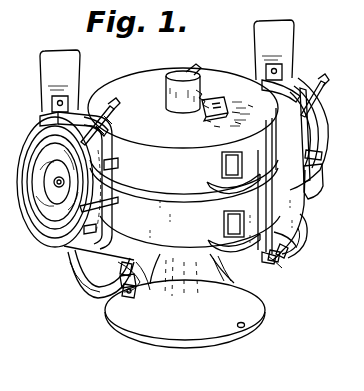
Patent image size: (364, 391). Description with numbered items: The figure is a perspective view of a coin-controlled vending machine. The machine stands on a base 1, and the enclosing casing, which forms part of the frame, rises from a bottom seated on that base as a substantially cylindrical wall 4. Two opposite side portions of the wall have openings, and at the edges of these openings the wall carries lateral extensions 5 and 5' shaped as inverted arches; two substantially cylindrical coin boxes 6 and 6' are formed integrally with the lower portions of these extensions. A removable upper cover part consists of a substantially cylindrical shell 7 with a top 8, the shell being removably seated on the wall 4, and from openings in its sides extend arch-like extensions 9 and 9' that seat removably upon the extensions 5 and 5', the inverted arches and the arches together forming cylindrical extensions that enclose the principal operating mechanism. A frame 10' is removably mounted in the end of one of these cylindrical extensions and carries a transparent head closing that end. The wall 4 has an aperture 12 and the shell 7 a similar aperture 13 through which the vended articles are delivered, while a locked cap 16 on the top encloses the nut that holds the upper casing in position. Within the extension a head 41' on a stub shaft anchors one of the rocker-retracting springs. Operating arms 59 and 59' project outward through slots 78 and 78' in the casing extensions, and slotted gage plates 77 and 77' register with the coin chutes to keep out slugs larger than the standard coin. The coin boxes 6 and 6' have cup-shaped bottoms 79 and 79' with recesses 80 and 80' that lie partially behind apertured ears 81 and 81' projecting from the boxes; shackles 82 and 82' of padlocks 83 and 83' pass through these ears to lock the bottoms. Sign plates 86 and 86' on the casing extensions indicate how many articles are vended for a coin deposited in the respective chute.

The base 1 is at (188, 349).
The cylindrical wall 4 is at (80, 262).
The lateral extension 5 is at (320, 181).
The lateral extension 5' is at (87, 273).
The cylindrical box 6 is at (307, 233).
The cylindrical box 6' is at (63, 284).
The cylindrical shell 7 is at (312, 128).
The top 8 is at (222, 82).
The extension 9 is at (319, 134).
The extension 9' is at (95, 100).
The frame 10' is at (67, 186).
The aperture 12 is at (224, 224).
The aperture 13 is at (222, 160).
The cap 16 is at (187, 72).
The head 41' is at (35, 196).
The operating arm 59 is at (328, 95).
The operating arm 59' is at (110, 98).
The slotted gage plate 77 is at (297, 75).
The slotted gage plate 77' is at (35, 111).
The slot 78 is at (334, 152).
The slot 78' is at (138, 161).
The cup-shaped bottom 79 is at (309, 237).
The cup-shaped bottom 79' is at (95, 287).
The recess 80 is at (266, 271).
The recess 80' is at (89, 304).
The apertured ear 81 is at (304, 249).
The apertured ear 81' is at (157, 269).
The shackle 82 is at (302, 262).
The shackle 82' is at (156, 287).
The padlock 83 is at (290, 278).
The padlock 83' is at (149, 291).
The sign plate 86 is at (290, 50).
The sign plate 86' is at (56, 71).